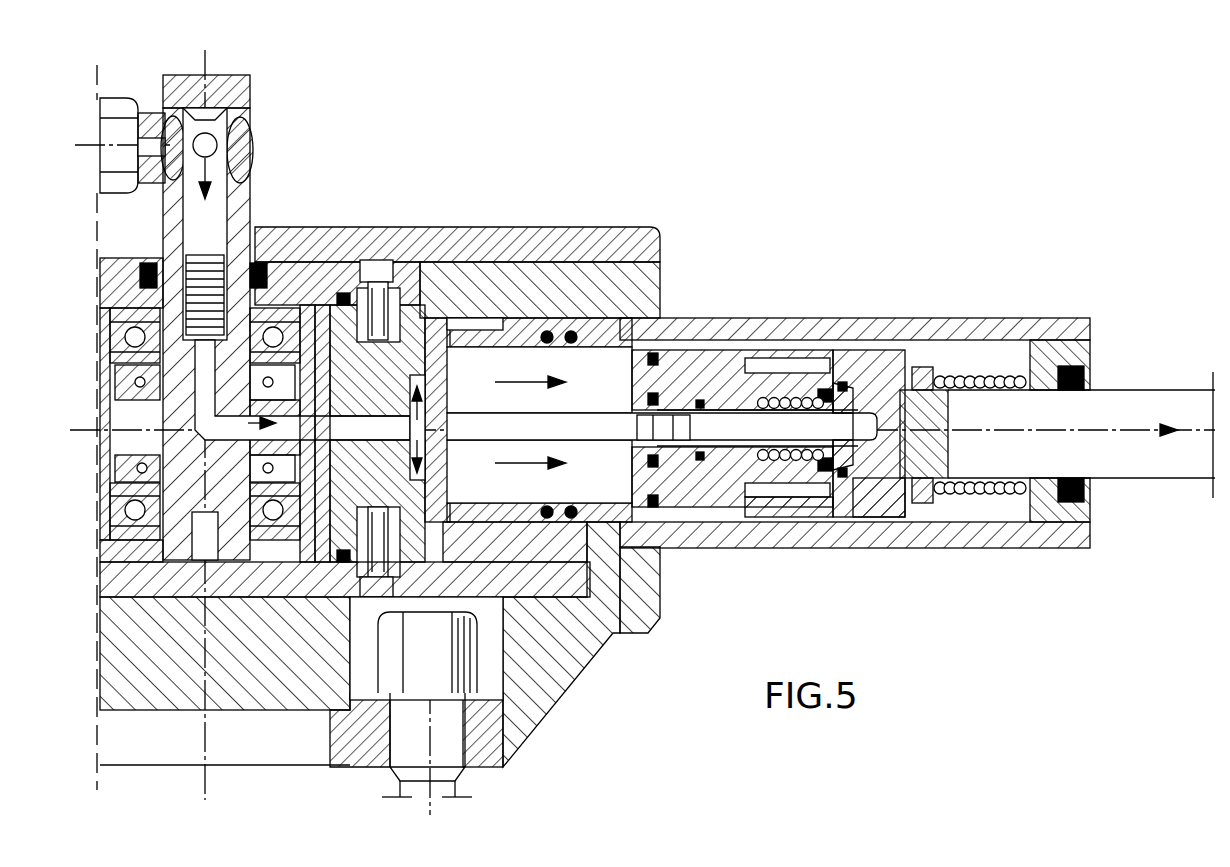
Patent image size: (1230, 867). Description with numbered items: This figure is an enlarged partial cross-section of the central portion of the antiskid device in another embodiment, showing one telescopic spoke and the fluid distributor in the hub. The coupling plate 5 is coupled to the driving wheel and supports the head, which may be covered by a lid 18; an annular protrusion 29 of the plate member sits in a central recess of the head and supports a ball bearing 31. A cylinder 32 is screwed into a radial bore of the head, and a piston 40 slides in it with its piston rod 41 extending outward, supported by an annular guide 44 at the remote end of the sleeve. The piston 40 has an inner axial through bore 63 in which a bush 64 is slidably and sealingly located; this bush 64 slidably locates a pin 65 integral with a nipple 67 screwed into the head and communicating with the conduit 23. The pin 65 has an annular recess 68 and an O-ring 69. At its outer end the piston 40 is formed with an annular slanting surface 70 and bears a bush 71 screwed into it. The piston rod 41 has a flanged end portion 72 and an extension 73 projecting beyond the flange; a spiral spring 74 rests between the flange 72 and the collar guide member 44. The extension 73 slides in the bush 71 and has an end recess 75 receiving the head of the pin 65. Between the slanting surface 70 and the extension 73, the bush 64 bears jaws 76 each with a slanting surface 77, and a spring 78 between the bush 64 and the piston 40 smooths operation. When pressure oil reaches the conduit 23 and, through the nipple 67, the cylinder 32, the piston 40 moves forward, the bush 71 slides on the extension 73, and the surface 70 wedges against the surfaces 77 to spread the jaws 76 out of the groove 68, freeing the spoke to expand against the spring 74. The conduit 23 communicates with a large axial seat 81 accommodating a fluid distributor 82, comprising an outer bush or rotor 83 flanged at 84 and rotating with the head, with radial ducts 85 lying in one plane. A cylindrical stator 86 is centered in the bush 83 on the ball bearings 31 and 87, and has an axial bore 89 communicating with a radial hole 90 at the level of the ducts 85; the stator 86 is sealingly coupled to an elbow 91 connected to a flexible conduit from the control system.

The coupling plate 5 is at (560, 708).
The lid 18 is at (478, 246).
The conduit 23 is at (325, 420).
The annular protrusion 29 is at (318, 555).
The ball bearing 31 is at (120, 507).
The cylinder 32 is at (514, 335).
The piston 40 is at (727, 357).
The piston rod 41 is at (1118, 407).
The annular guide 44 is at (1082, 352).
The inner axial through bore 63 is at (720, 450).
The bush 64 is at (740, 443).
The pin 65 is at (660, 612).
The nipple 67 is at (420, 340).
The annular recess 68 is at (678, 412).
The O-ring 69 is at (650, 355).
The annular slanting surface 70 is at (807, 500).
The bush 71 is at (860, 505).
The flanged end portion 72 is at (918, 492).
The extension 73 is at (900, 452).
The spiral spring 74 is at (998, 494).
The end recess 75 is at (868, 420).
The jaws 76 is at (700, 398).
The slanting surface 77 is at (826, 388).
The spring 78 is at (776, 397).
The seat 81 is at (300, 530).
The fluid distributor 82 is at (256, 184).
The outer bush or rotor 83 is at (320, 360).
The flange 84 is at (341, 276).
The radial ducts 85 is at (306, 320).
The cylindrical stator 86 is at (160, 208).
The ball bearing 87 is at (120, 320).
The axial bore 89 is at (200, 364).
The radial hole 90 is at (190, 438).
The elbow 91 is at (115, 105).